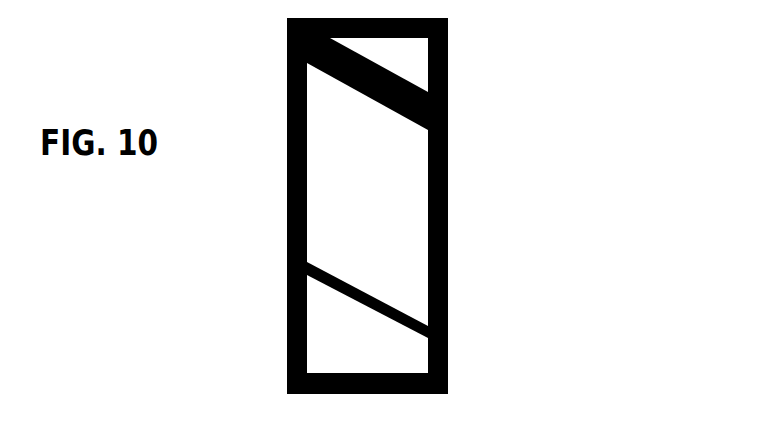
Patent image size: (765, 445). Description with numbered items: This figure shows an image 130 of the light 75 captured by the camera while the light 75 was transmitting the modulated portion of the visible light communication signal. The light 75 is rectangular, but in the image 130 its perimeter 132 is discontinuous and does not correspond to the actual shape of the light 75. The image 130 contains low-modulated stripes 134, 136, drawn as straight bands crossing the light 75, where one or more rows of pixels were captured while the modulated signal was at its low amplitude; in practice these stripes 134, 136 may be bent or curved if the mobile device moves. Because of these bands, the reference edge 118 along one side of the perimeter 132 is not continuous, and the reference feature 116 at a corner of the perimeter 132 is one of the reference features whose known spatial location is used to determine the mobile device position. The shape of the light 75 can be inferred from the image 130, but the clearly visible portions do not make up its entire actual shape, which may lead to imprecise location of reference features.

The image 130 is at (302, 198).
The reference edge 118 is at (318, 144).
The low-modulated stripe 136 is at (409, 139).
The perimeter 132 is at (428, 228).
The low-modulated stripe 134 is at (345, 264).
The light 75 is at (413, 292).
The reference feature 116 is at (416, 359).